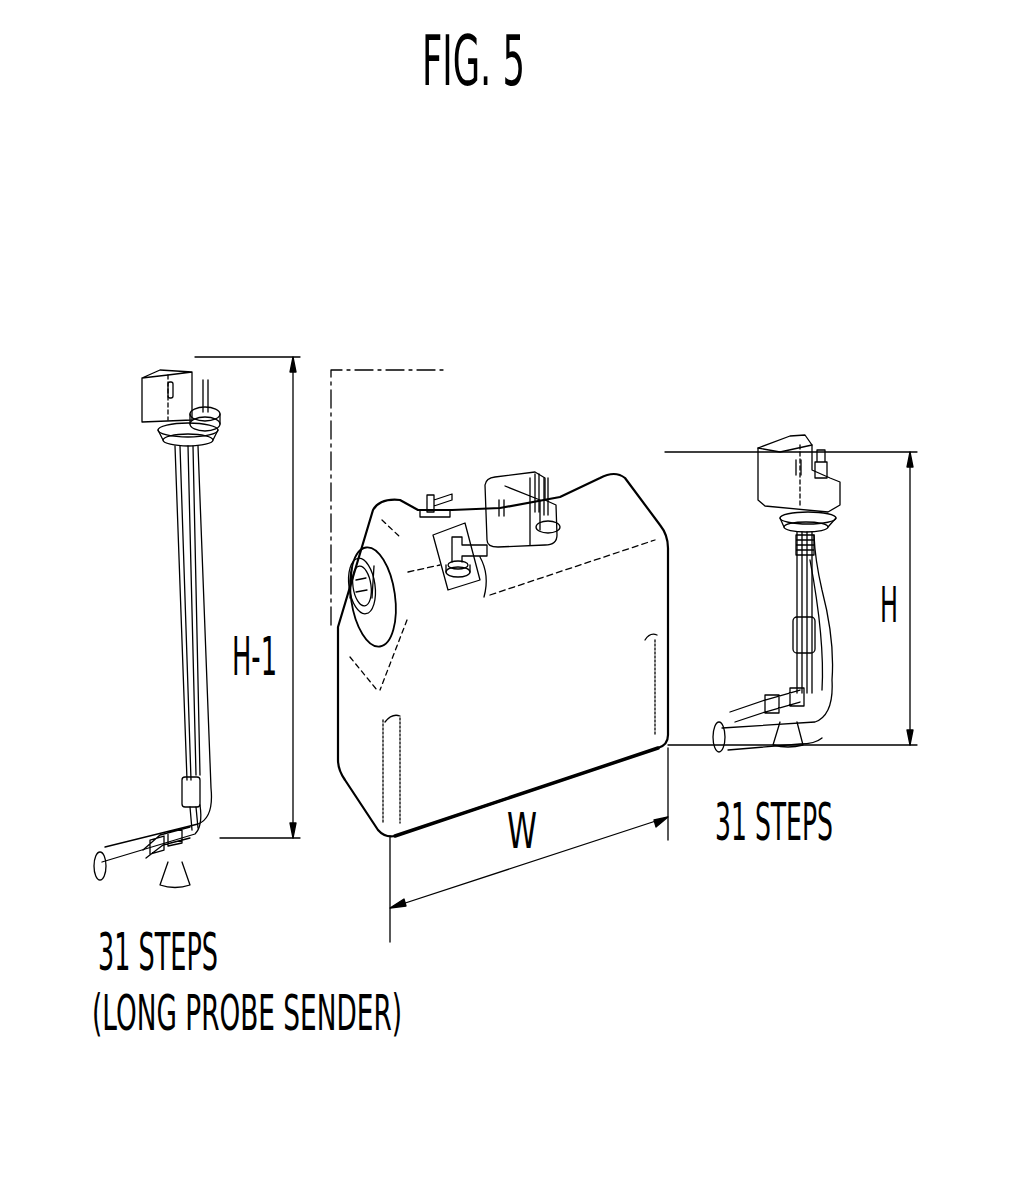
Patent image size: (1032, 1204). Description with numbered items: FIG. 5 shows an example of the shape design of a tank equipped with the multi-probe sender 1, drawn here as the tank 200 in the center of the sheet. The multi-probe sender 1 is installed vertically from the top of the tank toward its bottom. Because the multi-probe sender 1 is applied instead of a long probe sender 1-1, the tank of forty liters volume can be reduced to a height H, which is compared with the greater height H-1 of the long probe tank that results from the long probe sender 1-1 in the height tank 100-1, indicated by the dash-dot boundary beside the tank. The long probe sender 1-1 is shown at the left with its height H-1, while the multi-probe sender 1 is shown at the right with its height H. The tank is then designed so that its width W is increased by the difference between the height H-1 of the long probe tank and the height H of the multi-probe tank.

The fuel tank 200 is at (470, 520).
The multi-probe sender 1 is at (528, 476).
The long probe sender 1-1 is at (138, 522).
The height tank 100-1 is at (330, 440).